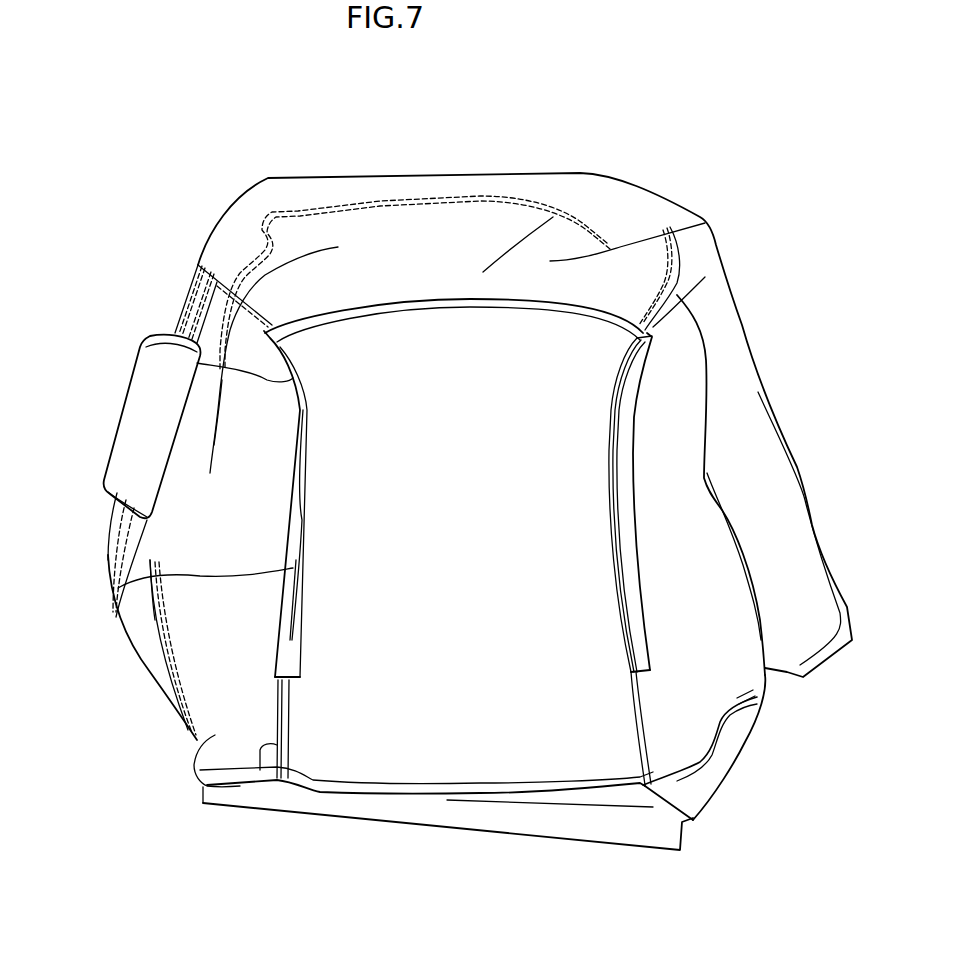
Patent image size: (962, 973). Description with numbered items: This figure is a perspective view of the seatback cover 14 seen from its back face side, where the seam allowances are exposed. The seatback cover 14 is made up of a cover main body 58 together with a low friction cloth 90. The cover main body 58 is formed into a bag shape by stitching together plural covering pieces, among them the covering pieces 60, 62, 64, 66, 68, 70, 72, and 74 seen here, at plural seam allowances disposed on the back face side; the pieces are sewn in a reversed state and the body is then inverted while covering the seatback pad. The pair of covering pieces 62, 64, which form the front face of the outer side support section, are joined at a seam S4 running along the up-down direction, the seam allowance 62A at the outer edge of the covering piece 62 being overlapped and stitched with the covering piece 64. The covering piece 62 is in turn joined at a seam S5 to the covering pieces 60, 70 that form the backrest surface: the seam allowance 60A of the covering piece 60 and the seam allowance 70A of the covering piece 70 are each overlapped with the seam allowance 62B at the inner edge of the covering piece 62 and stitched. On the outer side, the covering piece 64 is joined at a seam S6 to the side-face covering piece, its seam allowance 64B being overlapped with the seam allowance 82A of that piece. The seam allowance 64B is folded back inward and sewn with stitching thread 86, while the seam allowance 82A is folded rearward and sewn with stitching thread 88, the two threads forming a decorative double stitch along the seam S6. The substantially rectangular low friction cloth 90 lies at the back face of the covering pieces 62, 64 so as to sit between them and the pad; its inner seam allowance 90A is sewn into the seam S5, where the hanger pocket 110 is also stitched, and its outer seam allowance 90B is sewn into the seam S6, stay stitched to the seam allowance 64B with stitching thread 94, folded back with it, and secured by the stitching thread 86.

The seatback cover 14 is at (457, 131).
The covering piece 70 is at (386, 222).
The covering piece 72 is at (508, 172).
The seam allowance 70A is at (250, 313).
The seam allowance 82A is at (180, 307).
The stitching thread 88 is at (118, 523).
The seam S6 is at (118, 536).
The stitching thread 86 is at (107, 580).
The seam allowance 90B is at (140, 525).
The seam allowance 64B is at (155, 572).
The covering piece 64 is at (150, 680).
The stitching thread 94 is at (175, 687).
The seam S4 is at (153, 649).
The seam allowance 62A is at (147, 632).
The covering piece 62 is at (194, 758).
The seam allowance 62B is at (262, 772).
The covering piece 60 is at (428, 742).
The cover main body 58 is at (487, 832).
The covering piece 74 is at (552, 817).
The covering piece 66 is at (683, 720).
The covering piece 68 is at (742, 407).
The low friction cloth 90 is at (262, 485).
The seam allowance 90A is at (305, 518).
The hanger pocket 110 is at (288, 617).
The seam S5 is at (290, 715).
The seam allowance 60A is at (290, 742).